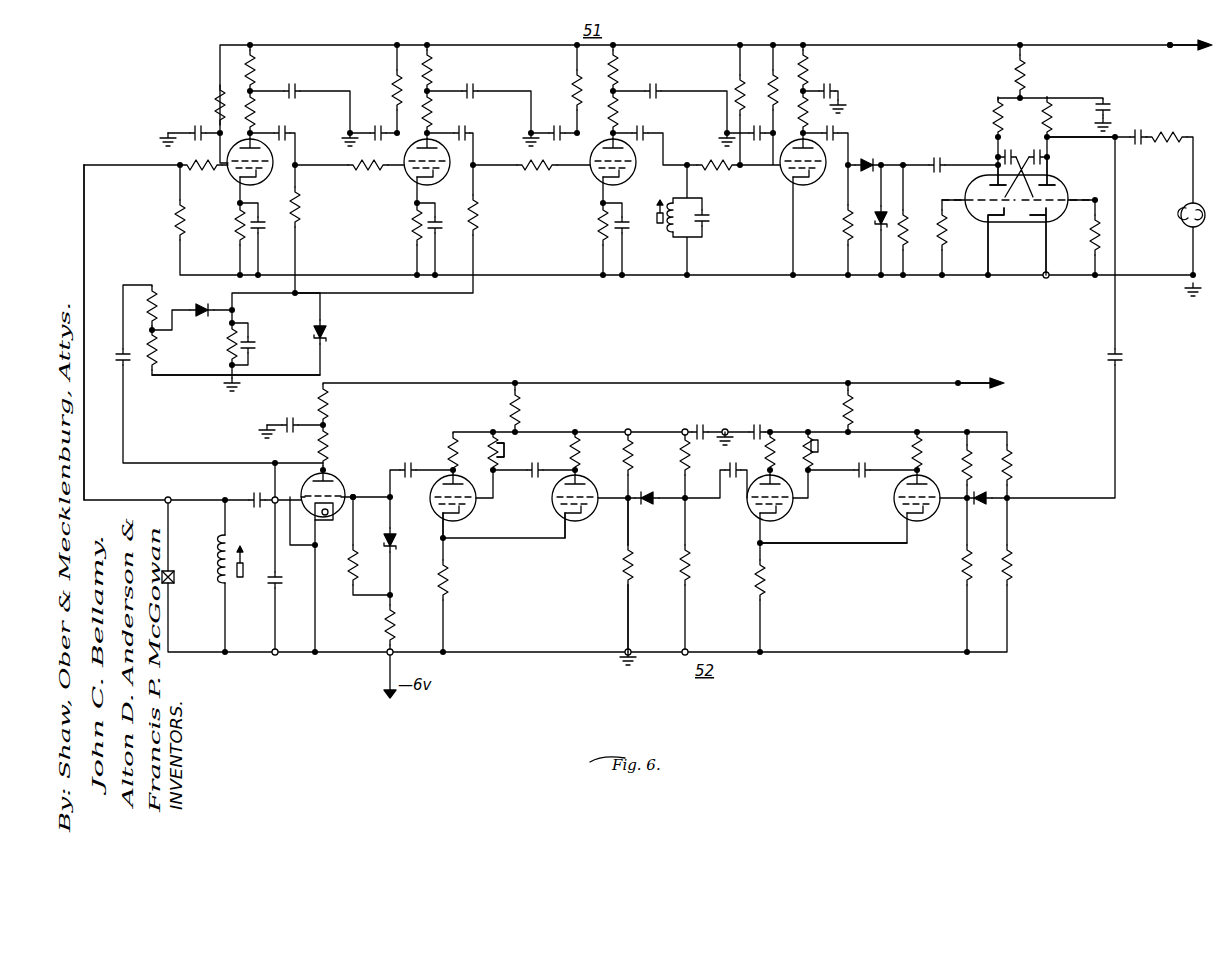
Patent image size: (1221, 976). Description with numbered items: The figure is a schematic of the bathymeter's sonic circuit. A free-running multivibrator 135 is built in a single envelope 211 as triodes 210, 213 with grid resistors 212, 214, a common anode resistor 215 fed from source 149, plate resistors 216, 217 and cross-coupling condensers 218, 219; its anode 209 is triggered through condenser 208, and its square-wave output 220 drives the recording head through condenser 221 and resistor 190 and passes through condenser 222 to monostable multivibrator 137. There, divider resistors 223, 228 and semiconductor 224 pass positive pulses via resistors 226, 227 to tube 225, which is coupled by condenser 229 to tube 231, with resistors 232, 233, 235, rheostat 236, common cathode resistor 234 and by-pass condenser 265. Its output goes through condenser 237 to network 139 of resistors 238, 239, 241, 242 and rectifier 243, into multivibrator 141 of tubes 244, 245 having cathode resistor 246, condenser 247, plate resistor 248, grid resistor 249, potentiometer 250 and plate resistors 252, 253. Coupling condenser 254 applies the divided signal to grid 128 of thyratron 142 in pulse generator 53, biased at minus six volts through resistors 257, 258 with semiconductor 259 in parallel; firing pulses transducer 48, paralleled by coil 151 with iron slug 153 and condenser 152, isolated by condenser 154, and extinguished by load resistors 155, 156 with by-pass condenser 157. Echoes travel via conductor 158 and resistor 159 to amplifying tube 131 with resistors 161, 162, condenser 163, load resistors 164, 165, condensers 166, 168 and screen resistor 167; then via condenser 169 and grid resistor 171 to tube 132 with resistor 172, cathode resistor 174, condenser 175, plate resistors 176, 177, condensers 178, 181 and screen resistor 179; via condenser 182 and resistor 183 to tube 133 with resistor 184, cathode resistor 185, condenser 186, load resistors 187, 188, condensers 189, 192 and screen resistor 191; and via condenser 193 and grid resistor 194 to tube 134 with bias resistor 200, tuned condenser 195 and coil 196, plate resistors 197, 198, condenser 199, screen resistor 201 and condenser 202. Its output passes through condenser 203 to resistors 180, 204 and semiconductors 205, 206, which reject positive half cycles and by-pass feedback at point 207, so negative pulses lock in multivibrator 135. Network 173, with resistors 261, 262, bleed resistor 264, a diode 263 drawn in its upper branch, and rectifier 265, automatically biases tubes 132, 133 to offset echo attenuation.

The barium titanate transducer 48 is at (172, 570).
The pulse generator 53 is at (330, 479).
The grid 128 is at (354, 492).
The amplifying tube 131 is at (257, 170).
The tube 132 is at (433, 170).
The tube 133 is at (610, 180).
The tube 134 is at (796, 172).
The free-running multivibrator 135 is at (1016, 238).
The monostable multivibrator 137 is at (833, 554).
The network 139 is at (647, 575).
The monostable multivibrator 141 is at (514, 520).
The thyratron 142 is at (330, 518).
The source of potential 149 is at (966, 378).
The coil 151 is at (222, 537).
The condenser 152 is at (282, 585).
The iron slug 153 is at (241, 578).
The condenser 154 is at (255, 492).
The load resistor 155 is at (328, 442).
The load resistor 156 is at (328, 404).
The by-pass condenser 157 is at (290, 415).
The conductor 158 is at (86, 490).
The resistor 159 is at (205, 172).
The resistor 161 is at (178, 218).
The resistor 162 is at (237, 222).
The condenser 163 is at (264, 230).
The load resistor 164 is at (254, 116).
The load resistor 165 is at (254, 77).
The by-pass condenser 166 is at (294, 88).
The resistor 167 is at (210, 101).
The by-pass condenser 168 is at (194, 128).
The coupling condenser 169 is at (288, 129).
The grid resistor 171 is at (368, 172).
The resistor 172 is at (309, 207).
The automatic biasing network 173 is at (236, 355).
The resistor 174 is at (412, 220).
The condenser 175 is at (450, 233).
The resistor 176 is at (432, 116).
The resistor 177 is at (431, 76).
The condenser 178 is at (471, 86).
The resistor 179 is at (394, 99).
The resistor 180 is at (906, 232).
The by-pass condenser 181 is at (378, 127).
The coupling condenser 182 is at (466, 128).
The grid resistor 183 is at (535, 172).
The resistor 184 is at (477, 216).
The resistor 185 is at (598, 222).
The condenser 186 is at (630, 232).
The load resistor 187 is at (618, 117).
The load resistor 188 is at (617, 74).
The by-pass condenser 189 is at (660, 83).
The resistor 190 is at (1176, 133).
The resistor 191 is at (590, 90).
The by-pass condenser 192 is at (556, 124).
The coupling condenser 193 is at (647, 130).
The grid resistor 194 is at (718, 172).
The condenser 195 is at (710, 218).
The coil 196 is at (663, 198).
The plate resistor 197 is at (806, 116).
The plate resistor 198 is at (806, 74).
The by-pass condenser 199 is at (828, 84).
The resistor 200 is at (742, 90).
The resistor 201 is at (775, 96).
The by-pass condenser 202 is at (757, 125).
The coupling condenser 203 is at (830, 145).
The resistor 204 is at (845, 226).
The semiconductor 205 is at (878, 228).
The semiconductor 206 is at (867, 158).
The point 207 is at (904, 162).
The condenser 208 is at (938, 158).
The anode 209 is at (990, 184).
The triode 210 is at (983, 215).
The envelope 211 is at (1028, 215).
The resistor 212 is at (938, 216).
The triode 213 is at (1056, 184).
The resistor 214 is at (1092, 232).
The anode resistor 215 is at (1023, 80).
The plate resistance 216 is at (1001, 112).
The resistor 217 is at (1050, 112).
The condenser 218 is at (1035, 156).
The condenser 219 is at (1008, 150).
The multivibrator output 220 is at (1052, 140).
The condenser 221 is at (1139, 128).
The condenser 222 is at (1122, 358).
The resistor 223 is at (1012, 570).
The semiconductor 224 is at (981, 491).
The tube 225 is at (898, 510).
The resistor 226 is at (964, 570).
The resistor 227 is at (964, 470).
The resistor 228 is at (1010, 464).
The condenser 229 is at (860, 478).
The tube 231 is at (785, 513).
The resistor 232 is at (914, 452).
The resistor 233 is at (819, 450).
The common cathode resistor 234 is at (766, 584).
The resistor 235 is at (852, 410).
The rheostat 236 is at (1182, 222).
The condenser 237 is at (731, 480).
The resistor 238 is at (682, 458).
The resistor 239 is at (690, 564).
The resistor 241 is at (624, 566).
The resistor 242 is at (626, 462).
The semiconductor rectifier 243 is at (648, 491).
The tube 244 is at (556, 510).
The tube 245 is at (466, 510).
The common cathode resistor 246 is at (447, 588).
The condenser 247 is at (547, 463).
The plate resistor 248 is at (578, 445).
The grid resistor 249 is at (504, 452).
The potentiometer 250 is at (255, 346).
The plate resistor 252 is at (449, 450).
The common plate resistor 253 is at (518, 408).
The coupling condenser 254 is at (408, 462).
The resistor 257 is at (386, 618).
The resistor 258 is at (350, 570).
The semiconductor 259 is at (118, 370).
The resistor 261 is at (156, 306).
The resistor 262 is at (152, 368).
The diode 263 is at (203, 304).
The resistor 264 is at (228, 350).
The rectifier 265 is at (328, 332).